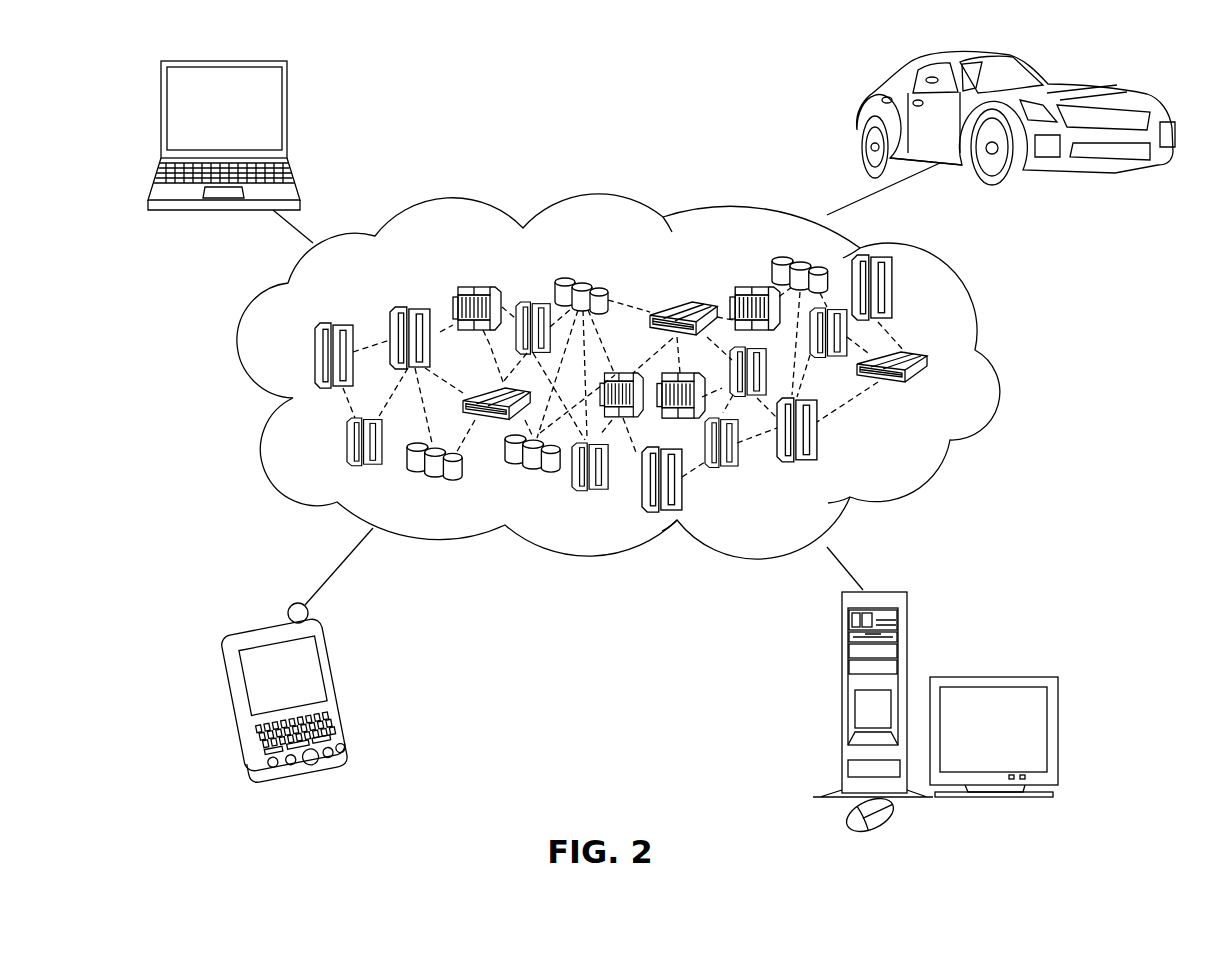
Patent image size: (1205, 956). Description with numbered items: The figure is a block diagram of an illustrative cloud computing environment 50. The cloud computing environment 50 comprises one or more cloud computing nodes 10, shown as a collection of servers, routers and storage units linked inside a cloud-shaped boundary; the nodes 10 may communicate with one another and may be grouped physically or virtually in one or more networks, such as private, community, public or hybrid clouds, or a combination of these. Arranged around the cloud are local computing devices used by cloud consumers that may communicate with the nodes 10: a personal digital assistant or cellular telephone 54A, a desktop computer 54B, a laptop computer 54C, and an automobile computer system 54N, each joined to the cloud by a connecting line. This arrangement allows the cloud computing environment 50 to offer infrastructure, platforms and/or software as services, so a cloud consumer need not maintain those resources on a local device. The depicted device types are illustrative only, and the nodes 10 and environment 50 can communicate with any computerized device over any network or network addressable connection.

The cloud computing nodes 10 is at (905, 455).
The cloud computing environment 50 is at (995, 366).
The personal digital assistant (PDA) or cellular telephone 54A is at (333, 658).
The desktop computer 54B is at (842, 645).
The laptop computer 54C is at (287, 93).
The automobile computer system 54N is at (858, 108).